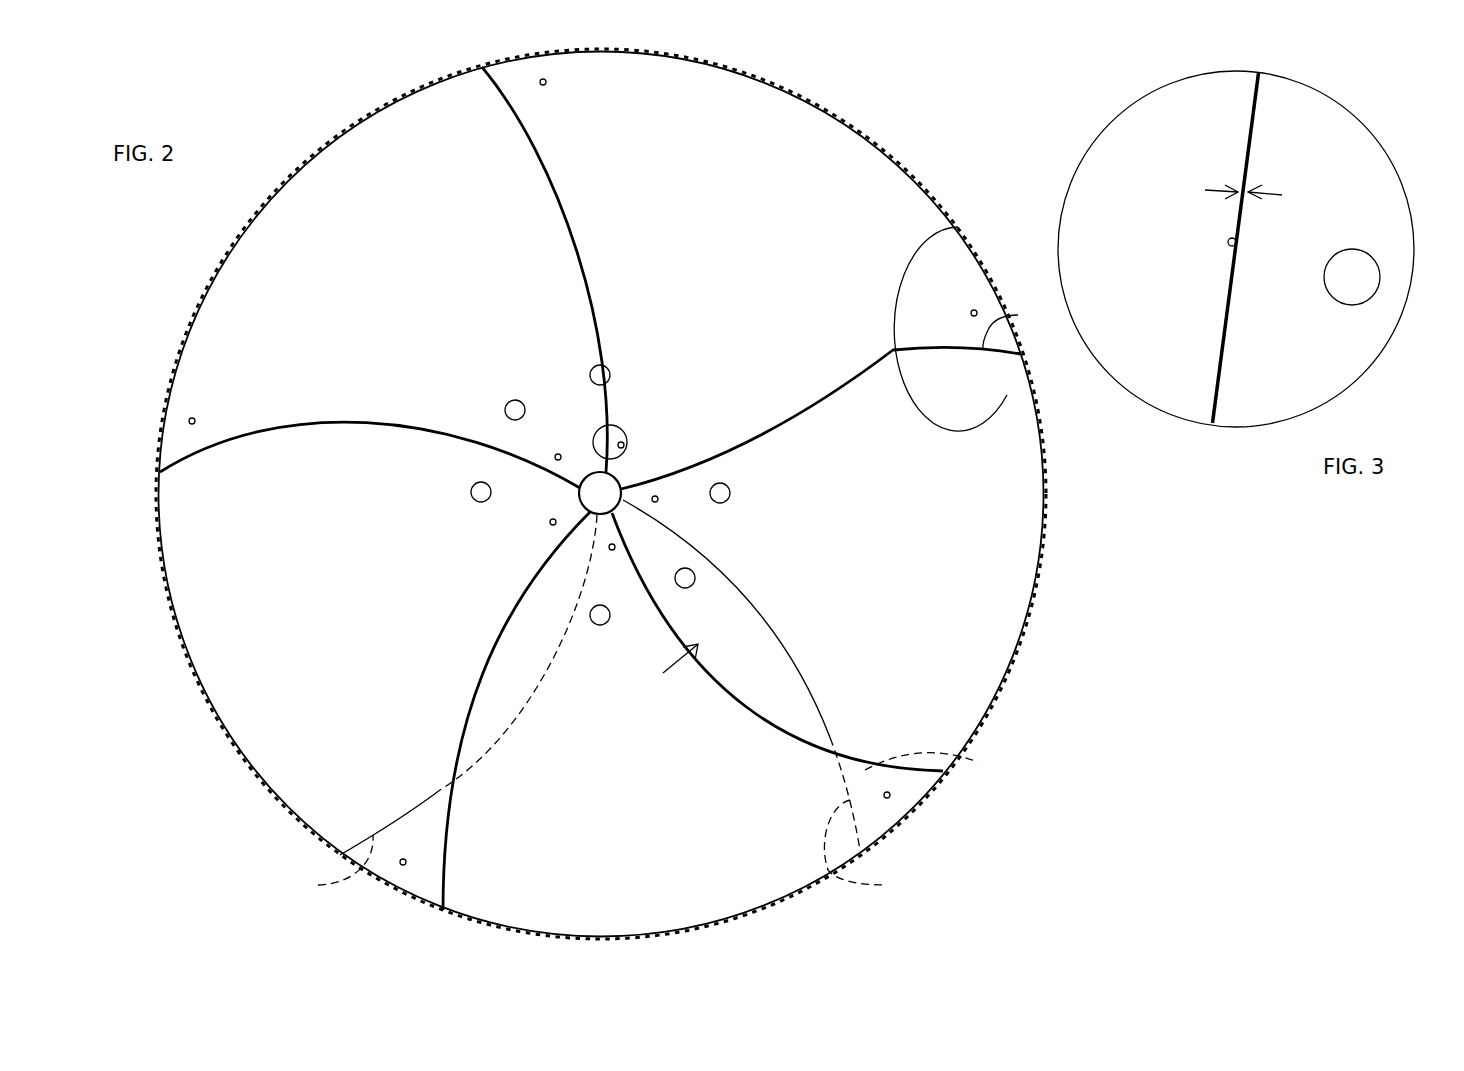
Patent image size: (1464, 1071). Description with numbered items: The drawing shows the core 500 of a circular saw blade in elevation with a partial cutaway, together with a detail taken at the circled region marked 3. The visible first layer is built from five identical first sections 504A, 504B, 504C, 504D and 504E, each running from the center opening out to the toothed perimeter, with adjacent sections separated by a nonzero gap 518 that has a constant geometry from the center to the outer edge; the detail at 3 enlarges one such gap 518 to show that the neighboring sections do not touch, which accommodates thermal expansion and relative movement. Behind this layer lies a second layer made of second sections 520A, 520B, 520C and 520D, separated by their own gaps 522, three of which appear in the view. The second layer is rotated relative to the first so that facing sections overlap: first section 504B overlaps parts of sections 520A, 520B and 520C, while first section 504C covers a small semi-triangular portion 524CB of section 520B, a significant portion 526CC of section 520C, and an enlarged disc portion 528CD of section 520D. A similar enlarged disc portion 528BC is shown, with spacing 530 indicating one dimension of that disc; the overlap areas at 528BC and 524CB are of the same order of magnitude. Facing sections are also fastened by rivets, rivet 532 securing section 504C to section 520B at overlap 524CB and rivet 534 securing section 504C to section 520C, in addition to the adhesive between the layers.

In FIG. 2, the core 500 is at (266, 168).
In FIG. 2, the first section 504A is at (797, 167).
In FIG. 3, the first section 504A is at (1312, 360).
In FIG. 2, the first section 504B is at (985, 548).
In FIG. 2, the first section 504C is at (770, 862).
In FIG. 2, the first section 504D is at (247, 633).
In FIG. 2, the first section 504E is at (268, 268).
In FIG. 3, the first section 504E is at (1150, 143).
In FIG. 3, the gap 518 is at (1262, 190).
In FIG. 2, the second section 520A is at (936, 264).
In FIG. 2, the second section 520B is at (985, 393).
In FIG. 2, the second section 520C is at (419, 874).
In FIG. 2, the second section 520D is at (318, 748).
In FIG. 2, the gap 522 is at (663, 595).
In FIG. 2, the semi-triangular portion 524CB is at (888, 810).
In FIG. 2, the significant portion 526CC is at (622, 862).
In FIG. 2, the enlarged disc portion 528BC is at (760, 658).
In FIG. 2, the enlarged disc portion 528CD is at (524, 657).
In FIG. 2, the spacing 530 is at (747, 598).
In FIG. 2, the rivet 532 is at (546, 83).
In FIG. 2, the rivet 534 is at (556, 456).
In FIG. 3, the rivet 534 is at (1360, 284).
In FIG. 2, the detail view region of FIG. 3 is at (622, 439).